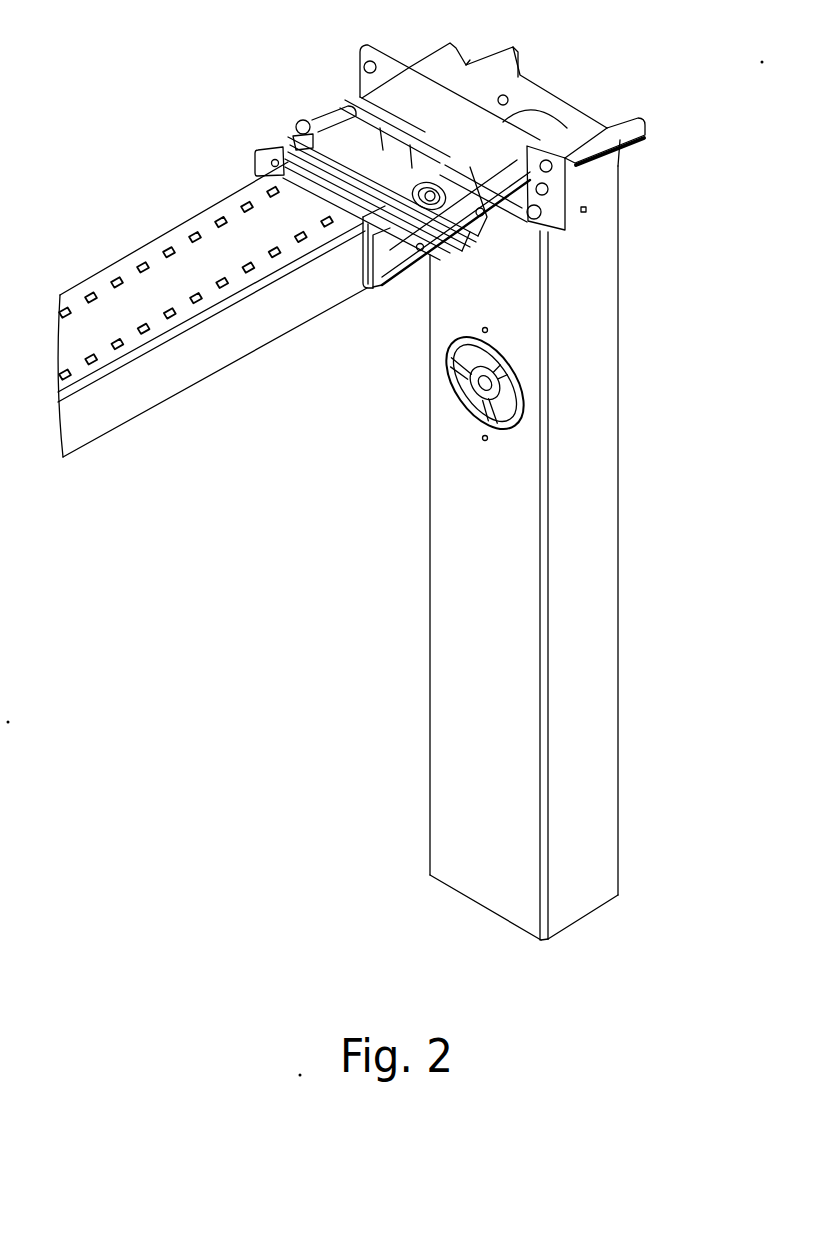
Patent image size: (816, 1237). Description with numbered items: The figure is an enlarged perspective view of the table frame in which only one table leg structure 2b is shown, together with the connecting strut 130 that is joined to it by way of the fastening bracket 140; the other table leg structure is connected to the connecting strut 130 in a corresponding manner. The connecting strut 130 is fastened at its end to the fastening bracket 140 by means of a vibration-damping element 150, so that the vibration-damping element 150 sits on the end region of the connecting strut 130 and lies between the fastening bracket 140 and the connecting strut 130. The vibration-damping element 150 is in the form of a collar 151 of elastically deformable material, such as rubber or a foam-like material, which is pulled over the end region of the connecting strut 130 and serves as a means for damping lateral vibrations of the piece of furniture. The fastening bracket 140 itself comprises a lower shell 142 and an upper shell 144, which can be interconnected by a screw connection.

The table leg structure 2b is at (603, 532).
The connecting strut 130 is at (190, 365).
The fastening bracket 140 is at (421, 206).
The lower shell 142 is at (392, 263).
The upper shell 144 is at (283, 147).
The vibration-damping element 150 is at (366, 240).
The collar 151 is at (378, 309).